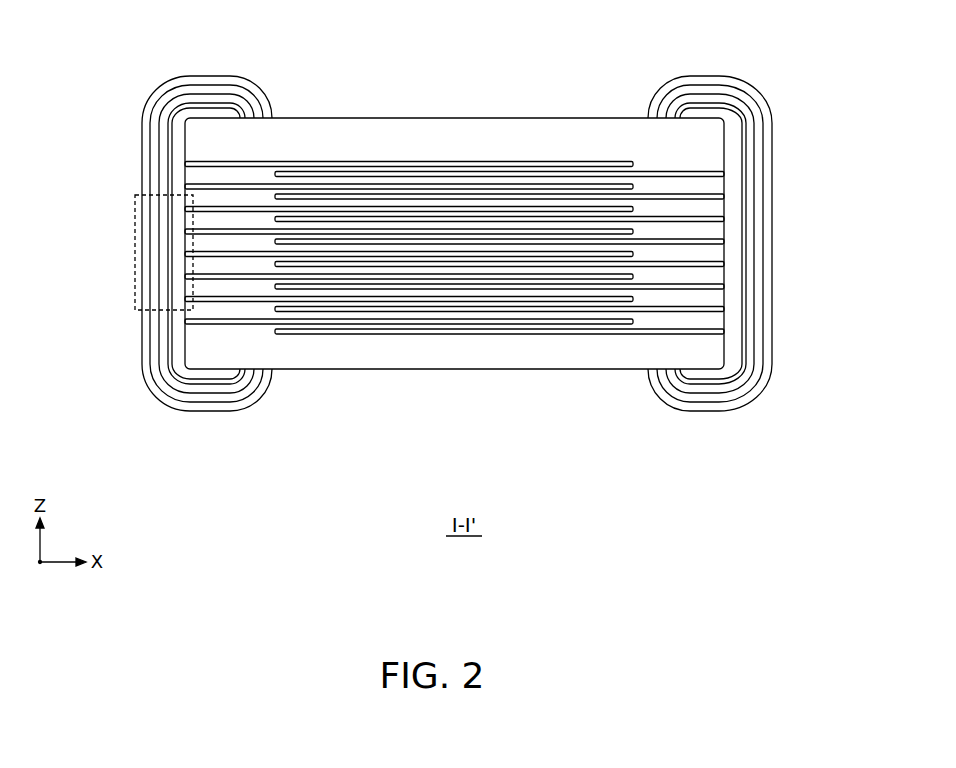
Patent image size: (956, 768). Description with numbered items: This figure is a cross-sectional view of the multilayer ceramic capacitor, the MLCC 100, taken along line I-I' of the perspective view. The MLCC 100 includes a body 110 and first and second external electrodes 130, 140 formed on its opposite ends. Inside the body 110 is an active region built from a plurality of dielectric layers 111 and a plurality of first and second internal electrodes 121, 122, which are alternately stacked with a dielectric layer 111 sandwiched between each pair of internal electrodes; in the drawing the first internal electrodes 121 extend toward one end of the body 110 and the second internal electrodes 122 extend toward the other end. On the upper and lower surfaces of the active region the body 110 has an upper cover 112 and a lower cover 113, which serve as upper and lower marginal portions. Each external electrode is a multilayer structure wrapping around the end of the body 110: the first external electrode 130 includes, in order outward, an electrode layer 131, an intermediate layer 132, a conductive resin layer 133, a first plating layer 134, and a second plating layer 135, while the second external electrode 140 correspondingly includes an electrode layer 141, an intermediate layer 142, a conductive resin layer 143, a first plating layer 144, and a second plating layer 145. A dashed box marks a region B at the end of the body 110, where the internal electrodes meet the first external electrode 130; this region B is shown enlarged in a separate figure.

The MLCC 100 is at (338, 29).
The body 110 is at (448, 370).
The dielectric layer 111 is at (433, 173).
The upper cover 112 is at (588, 143).
The lower cover 113 is at (530, 356).
The first internal electrode 121 is at (380, 161).
The second internal electrode 122 is at (502, 172).
The first external electrode 130 is at (207, 299).
The electrode layer 131 is at (266, 376).
The intermediate layer 132 is at (228, 376).
The conductive resin layer 133 is at (209, 388).
The first plating layer 134 is at (188, 402).
The second plating layer 135 is at (174, 278).
The second external electrode 140 is at (702, 299).
The electrode layer 141 is at (653, 375).
The intermediate layer 142 is at (685, 383).
The conductive resin layer 143 is at (700, 387).
The first plating layer 144 is at (717, 400).
The second plating layer 145 is at (740, 278).
The region B is at (133, 246).